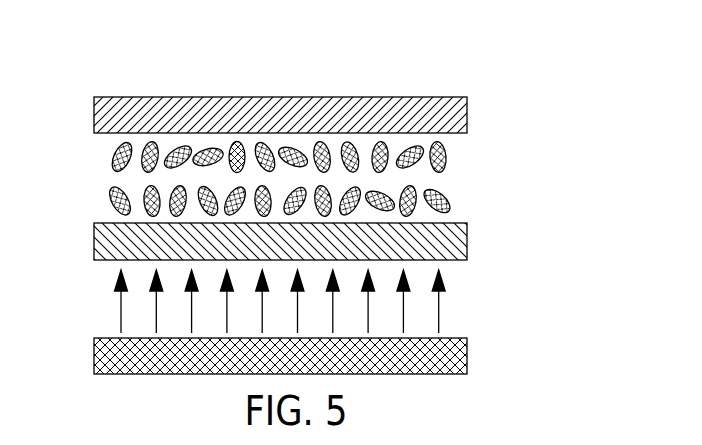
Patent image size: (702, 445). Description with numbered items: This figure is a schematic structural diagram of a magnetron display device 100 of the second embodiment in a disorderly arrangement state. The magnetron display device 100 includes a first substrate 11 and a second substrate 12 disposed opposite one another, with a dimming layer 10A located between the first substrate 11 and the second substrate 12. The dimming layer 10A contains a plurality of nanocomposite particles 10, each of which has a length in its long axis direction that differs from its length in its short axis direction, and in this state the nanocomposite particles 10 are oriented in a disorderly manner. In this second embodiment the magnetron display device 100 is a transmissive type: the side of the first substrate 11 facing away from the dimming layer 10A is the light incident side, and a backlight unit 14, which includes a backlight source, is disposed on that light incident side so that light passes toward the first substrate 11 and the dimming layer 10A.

The magnetron display device 100 is at (112, 60).
The second substrate 12 is at (460, 115).
The nanocomposite particles 10 is at (443, 152).
The dimming layer 10A is at (332, 179).
The first substrate 11 is at (447, 246).
The backlight unit 14 is at (447, 356).